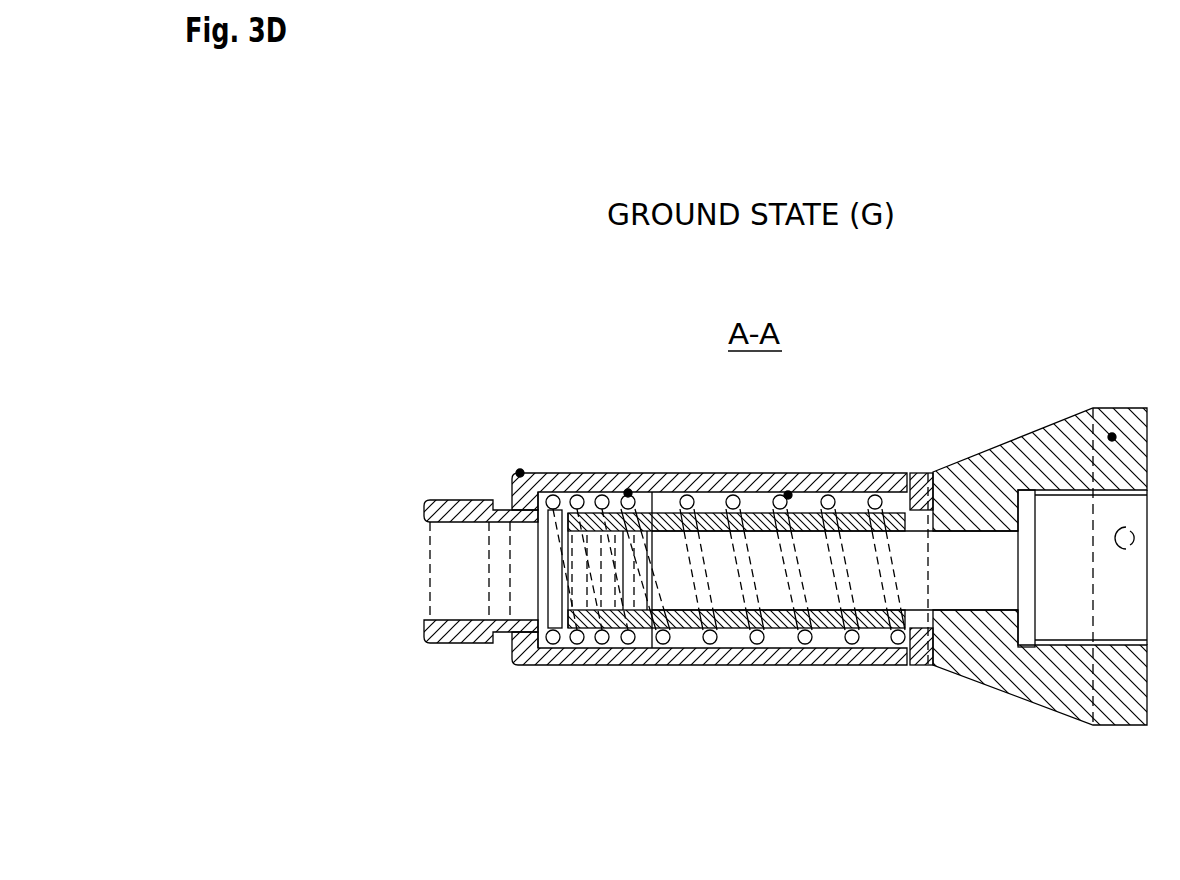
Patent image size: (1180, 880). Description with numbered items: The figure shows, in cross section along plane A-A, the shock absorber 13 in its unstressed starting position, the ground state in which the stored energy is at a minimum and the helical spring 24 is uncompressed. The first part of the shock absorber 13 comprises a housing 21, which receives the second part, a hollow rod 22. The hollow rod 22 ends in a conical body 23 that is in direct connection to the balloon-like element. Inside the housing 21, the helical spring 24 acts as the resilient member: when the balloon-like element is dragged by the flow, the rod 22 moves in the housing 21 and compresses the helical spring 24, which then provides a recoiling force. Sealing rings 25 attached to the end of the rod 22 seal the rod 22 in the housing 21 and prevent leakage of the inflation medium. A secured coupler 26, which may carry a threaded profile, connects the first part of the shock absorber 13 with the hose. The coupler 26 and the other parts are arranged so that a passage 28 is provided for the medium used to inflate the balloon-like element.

The shock absorber 13 is at (502, 422).
The housing 21 is at (605, 474).
The hollow rod 22 is at (687, 620).
The conical body 23 is at (1037, 668).
The helical spring 24 is at (792, 567).
The sealing rings 25 is at (607, 595).
The secured coupler 26 is at (457, 643).
The passage 28 is at (975, 570).